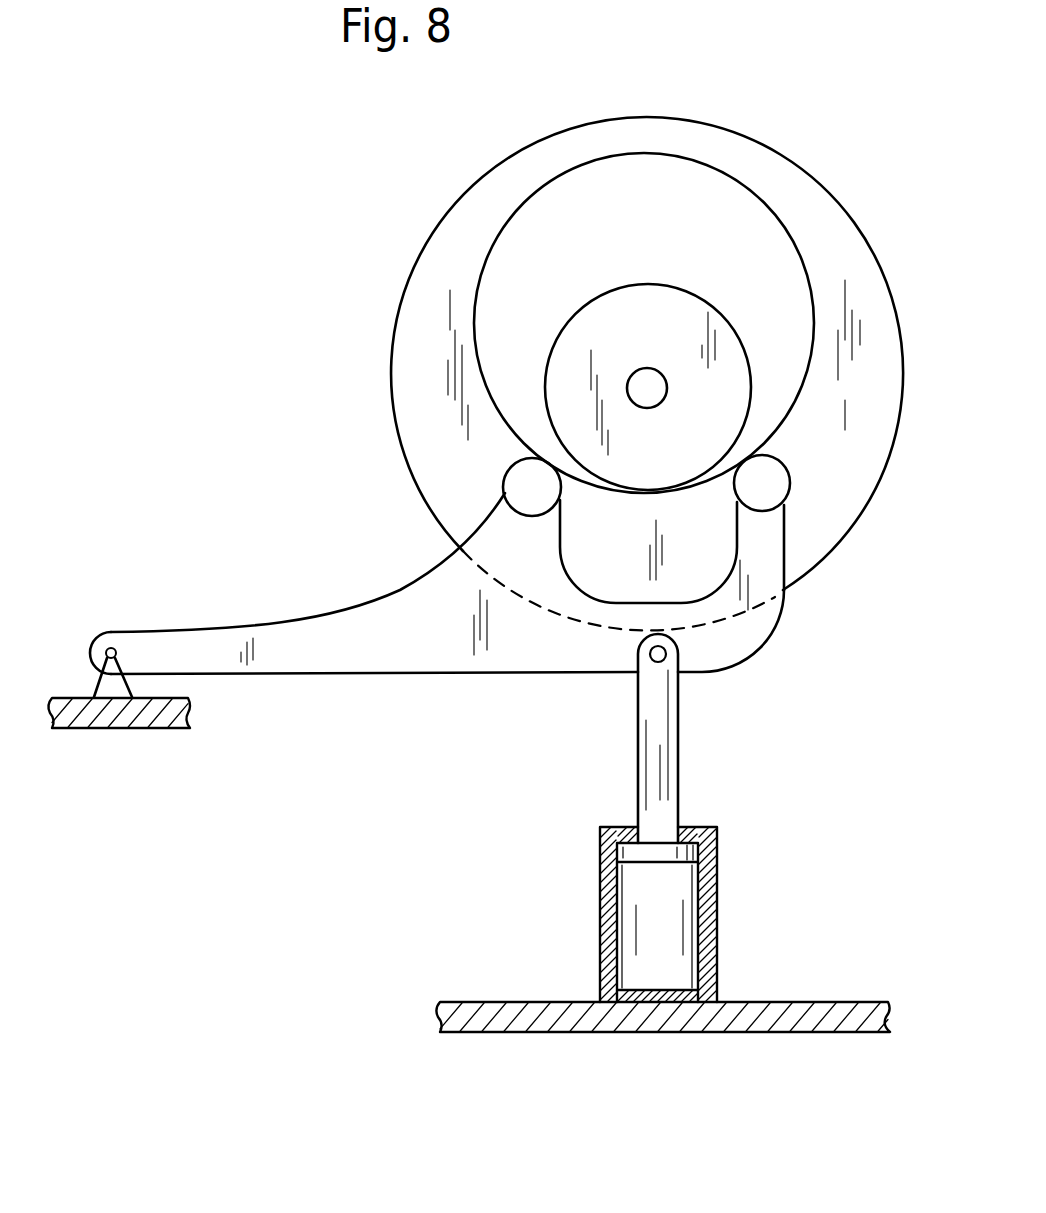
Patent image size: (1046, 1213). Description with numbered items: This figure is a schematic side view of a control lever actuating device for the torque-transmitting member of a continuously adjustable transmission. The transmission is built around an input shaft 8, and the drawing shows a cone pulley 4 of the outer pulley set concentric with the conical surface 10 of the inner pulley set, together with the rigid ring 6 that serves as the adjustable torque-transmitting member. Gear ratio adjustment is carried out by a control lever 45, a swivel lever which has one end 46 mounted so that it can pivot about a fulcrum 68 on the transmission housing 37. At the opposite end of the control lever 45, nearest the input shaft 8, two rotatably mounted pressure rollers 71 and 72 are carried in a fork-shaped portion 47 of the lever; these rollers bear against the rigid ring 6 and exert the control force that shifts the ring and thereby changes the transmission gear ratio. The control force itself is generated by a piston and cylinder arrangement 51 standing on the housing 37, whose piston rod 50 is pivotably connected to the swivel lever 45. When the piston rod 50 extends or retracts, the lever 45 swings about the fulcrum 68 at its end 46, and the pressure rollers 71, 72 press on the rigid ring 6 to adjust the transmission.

The cone pulley 4 is at (872, 316).
The rigid ring 6 is at (791, 234).
The input shaft 8 is at (657, 391).
The conical surface 10 is at (660, 347).
The transmission housing 37 is at (93, 717).
The control lever 45 is at (450, 655).
The end of control lever 46 is at (132, 642).
The roller bracket / fork 47 is at (670, 602).
The piston rod 50 is at (660, 755).
The piston and cylinder arrangement 51 is at (613, 910).
The fulcrum 68 is at (110, 647).
The pressure roller 71 is at (782, 483).
The pressure roller 72 is at (512, 490).